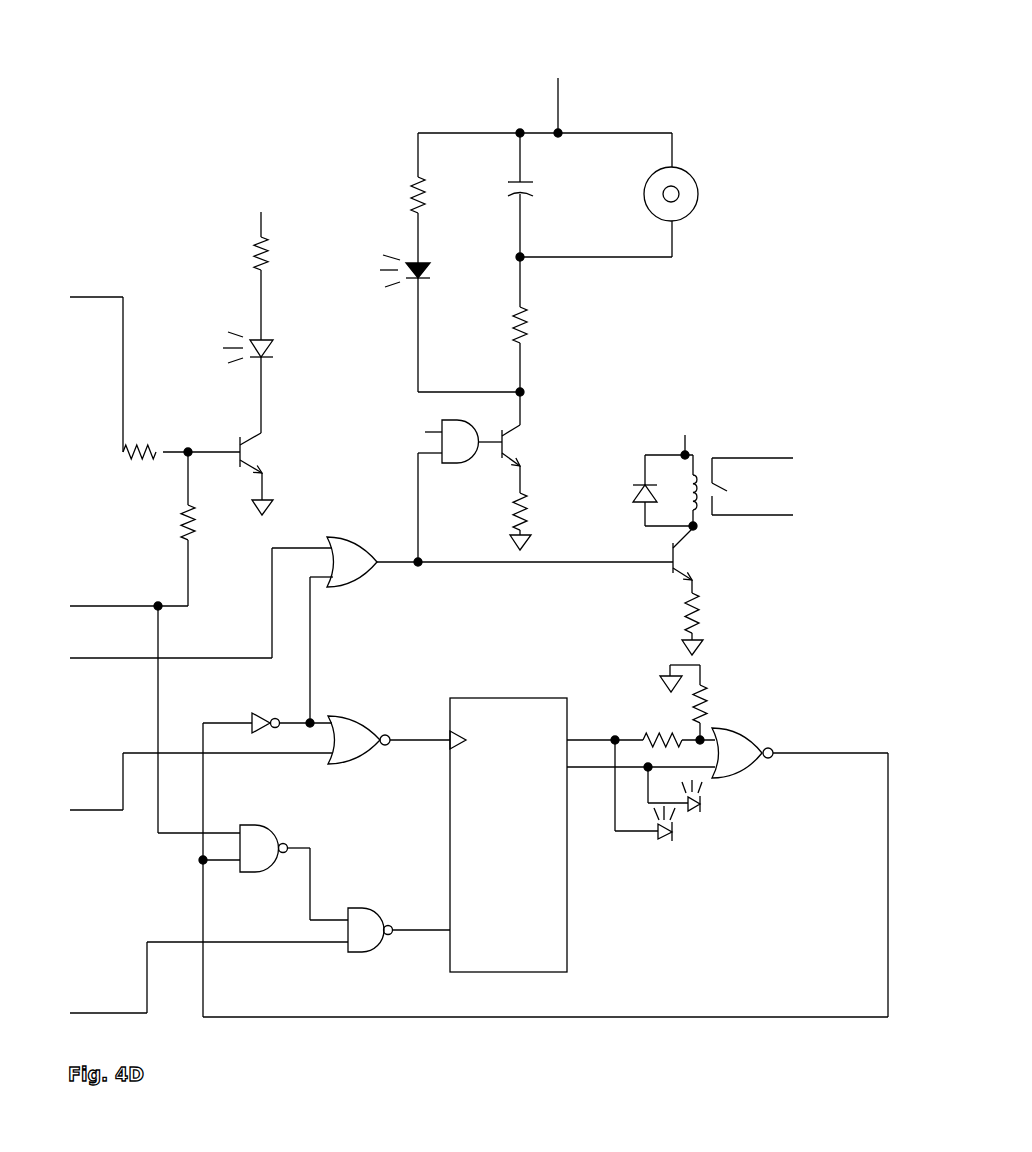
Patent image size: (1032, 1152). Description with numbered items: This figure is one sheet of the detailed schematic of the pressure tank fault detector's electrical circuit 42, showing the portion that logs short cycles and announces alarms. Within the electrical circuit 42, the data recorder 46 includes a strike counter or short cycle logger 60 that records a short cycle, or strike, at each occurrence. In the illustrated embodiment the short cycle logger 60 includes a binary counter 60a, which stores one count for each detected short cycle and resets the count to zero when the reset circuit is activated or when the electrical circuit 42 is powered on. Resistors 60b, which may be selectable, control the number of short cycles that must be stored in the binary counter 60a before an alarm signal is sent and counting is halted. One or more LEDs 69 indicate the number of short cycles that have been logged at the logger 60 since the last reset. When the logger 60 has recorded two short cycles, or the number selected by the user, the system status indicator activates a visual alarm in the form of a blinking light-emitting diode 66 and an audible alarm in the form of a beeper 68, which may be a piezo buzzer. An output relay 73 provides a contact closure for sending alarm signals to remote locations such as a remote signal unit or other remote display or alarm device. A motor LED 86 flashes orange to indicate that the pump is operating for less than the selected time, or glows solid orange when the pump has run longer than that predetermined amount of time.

The electrical circuit 42 is at (851, 31).
The data recorder 46 is at (382, 787).
The short cycle logger 60 is at (780, 643).
The binary counter 60a is at (445, 852).
The resistors 60b is at (636, 686).
The light-emitting diode 66 is at (406, 246).
The beeper 68 is at (690, 160).
The LEDs 69 is at (694, 840).
The output relay 73 is at (747, 535).
The motor LEDs 86 is at (279, 315).